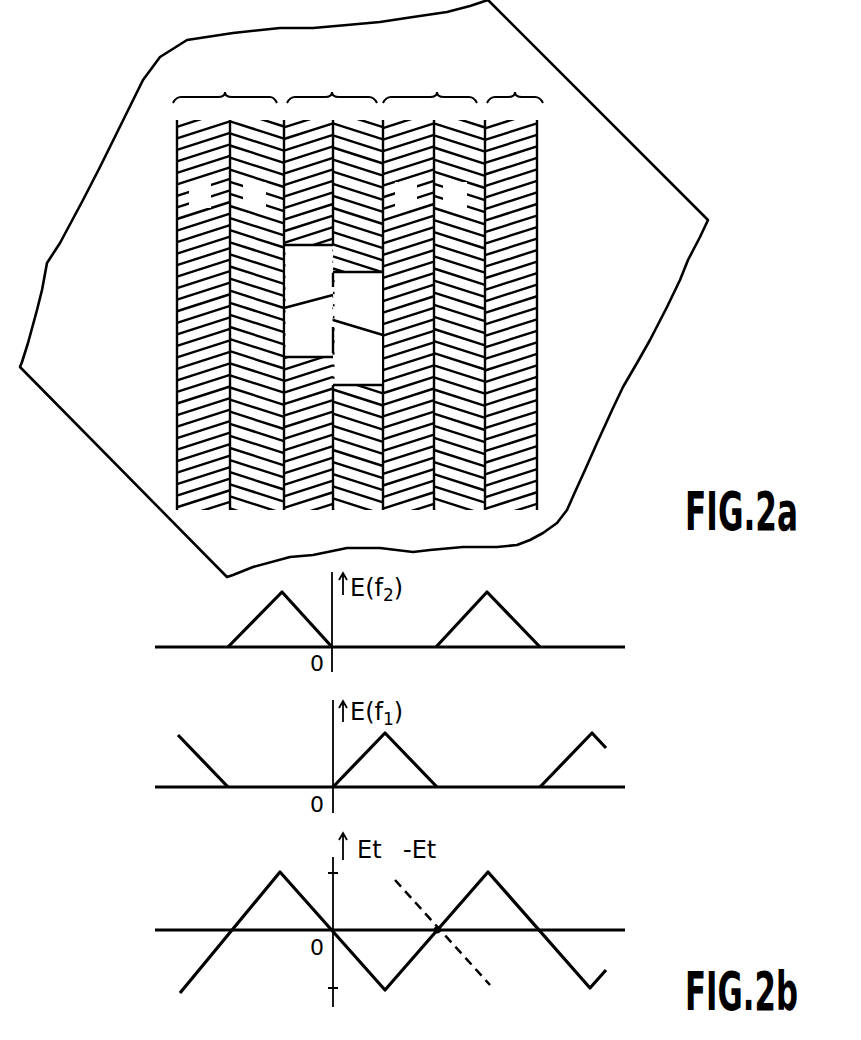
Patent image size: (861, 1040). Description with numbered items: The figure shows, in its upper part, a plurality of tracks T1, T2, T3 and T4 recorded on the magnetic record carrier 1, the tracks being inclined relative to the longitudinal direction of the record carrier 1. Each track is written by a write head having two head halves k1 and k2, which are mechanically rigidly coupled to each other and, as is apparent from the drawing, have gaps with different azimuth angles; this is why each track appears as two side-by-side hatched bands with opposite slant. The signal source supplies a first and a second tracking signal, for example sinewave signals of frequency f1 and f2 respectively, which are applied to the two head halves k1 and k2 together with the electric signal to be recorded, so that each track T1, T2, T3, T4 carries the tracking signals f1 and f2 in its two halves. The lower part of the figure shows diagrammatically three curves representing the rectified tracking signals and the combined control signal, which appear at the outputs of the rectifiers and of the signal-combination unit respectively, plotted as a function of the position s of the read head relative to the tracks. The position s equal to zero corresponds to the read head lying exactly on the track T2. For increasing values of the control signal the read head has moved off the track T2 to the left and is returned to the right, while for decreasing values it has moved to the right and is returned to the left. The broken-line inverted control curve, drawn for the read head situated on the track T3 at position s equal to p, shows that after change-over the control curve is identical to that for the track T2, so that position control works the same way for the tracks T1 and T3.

In FIG. 2A, the record carrier 1 is at (364, 288).
In FIG. 2A, the head half k1 is at (308, 301).
In FIG. 2A, the head half k2 is at (358, 328).
In FIG. 2A, the first tracking signal f1 is at (312, 315).
In FIG. 2A, the second tracking signal f2 is at (353, 315).
In FIG. 2A, the track T1 is at (225, 80).
In FIG. 2A, the track T2 is at (332, 80).
In FIG. 2A, the track T3 is at (430, 80).
In FIG. 2A, the track T4 is at (515, 80).
In FIG. 2B, the read head position on track T3 p is at (438, 950).
In FIG. 2B, the position of the read head s is at (590, 918).